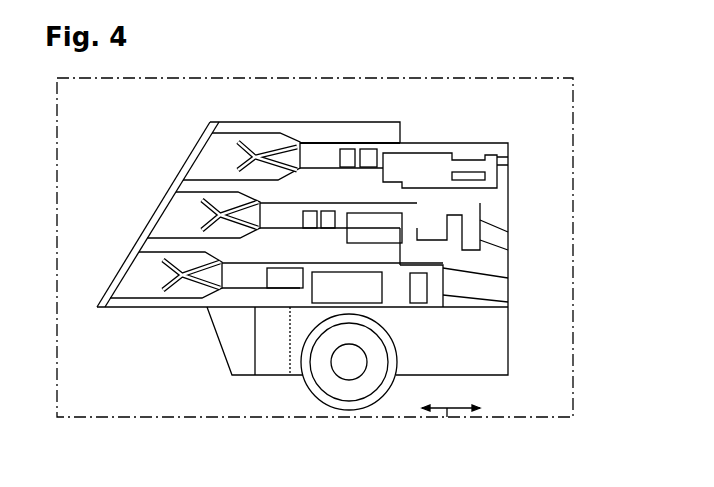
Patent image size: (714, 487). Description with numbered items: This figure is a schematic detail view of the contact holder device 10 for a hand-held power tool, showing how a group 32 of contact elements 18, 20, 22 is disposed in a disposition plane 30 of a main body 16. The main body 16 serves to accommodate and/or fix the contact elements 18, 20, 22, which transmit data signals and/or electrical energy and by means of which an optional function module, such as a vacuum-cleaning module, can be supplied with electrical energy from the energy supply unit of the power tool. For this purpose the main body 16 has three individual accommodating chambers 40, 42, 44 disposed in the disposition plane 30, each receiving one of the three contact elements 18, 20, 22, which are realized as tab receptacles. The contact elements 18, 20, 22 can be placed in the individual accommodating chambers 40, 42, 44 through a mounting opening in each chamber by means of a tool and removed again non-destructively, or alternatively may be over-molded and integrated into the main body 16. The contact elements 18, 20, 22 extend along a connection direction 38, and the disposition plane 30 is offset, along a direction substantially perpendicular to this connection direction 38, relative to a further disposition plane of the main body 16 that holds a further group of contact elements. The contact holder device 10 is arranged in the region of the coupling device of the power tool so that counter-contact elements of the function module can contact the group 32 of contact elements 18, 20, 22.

The contact holder device 10 is at (163, 426).
The main body 16 is at (485, 348).
The contact element 18 is at (290, 213).
The contact element 20 is at (297, 190).
The contact element 22 is at (242, 278).
The disposition plane 30 is at (573, 283).
The group of contact elements 32 is at (259, 104).
The connection direction 38 is at (451, 434).
The individual accommodating chamber 40 is at (220, 160).
The individual accommodating chamber 42 is at (188, 222).
The individual accommodating chamber 44 is at (157, 280).